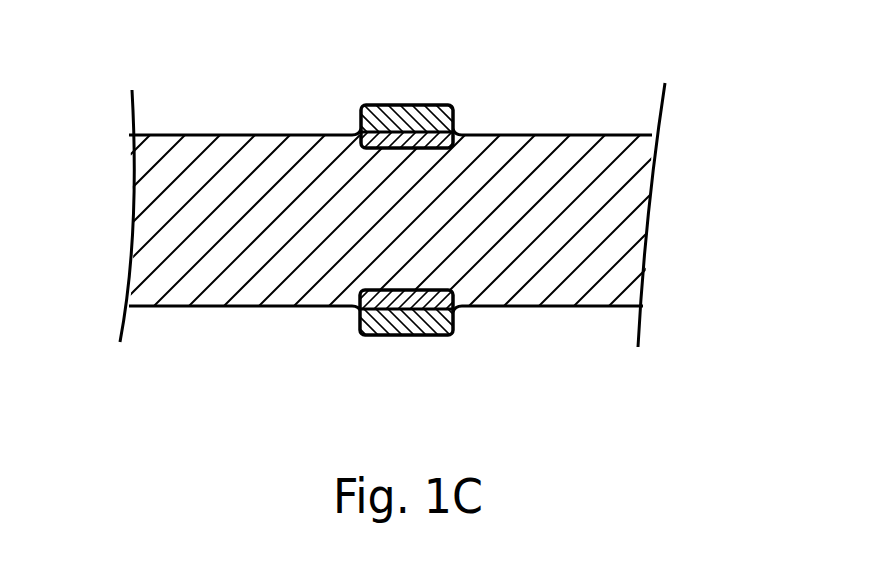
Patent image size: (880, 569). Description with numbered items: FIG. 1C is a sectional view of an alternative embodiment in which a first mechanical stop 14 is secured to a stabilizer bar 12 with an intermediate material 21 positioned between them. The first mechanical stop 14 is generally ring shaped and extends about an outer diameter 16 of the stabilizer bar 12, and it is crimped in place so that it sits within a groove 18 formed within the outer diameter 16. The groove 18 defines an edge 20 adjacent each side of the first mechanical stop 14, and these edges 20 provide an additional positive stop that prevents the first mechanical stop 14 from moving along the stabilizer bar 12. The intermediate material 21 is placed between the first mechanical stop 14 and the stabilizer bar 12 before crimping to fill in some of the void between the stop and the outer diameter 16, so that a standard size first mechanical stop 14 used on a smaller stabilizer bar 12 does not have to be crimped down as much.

The stabilizer bar 12 is at (167, 203).
The first mechanical stop 14 is at (430, 105).
The outer diameter 16 is at (235, 133).
The groove 18 is at (367, 290).
The edge 20 is at (355, 143).
The intermediate material 21 is at (365, 105).